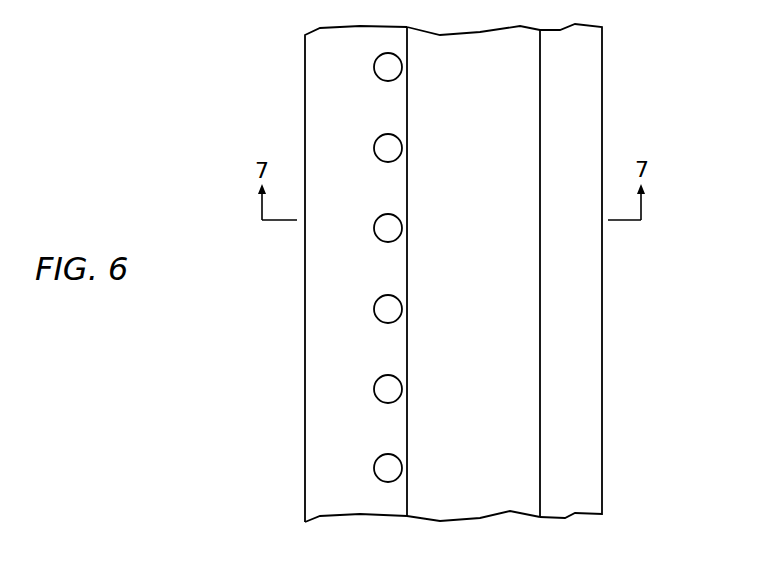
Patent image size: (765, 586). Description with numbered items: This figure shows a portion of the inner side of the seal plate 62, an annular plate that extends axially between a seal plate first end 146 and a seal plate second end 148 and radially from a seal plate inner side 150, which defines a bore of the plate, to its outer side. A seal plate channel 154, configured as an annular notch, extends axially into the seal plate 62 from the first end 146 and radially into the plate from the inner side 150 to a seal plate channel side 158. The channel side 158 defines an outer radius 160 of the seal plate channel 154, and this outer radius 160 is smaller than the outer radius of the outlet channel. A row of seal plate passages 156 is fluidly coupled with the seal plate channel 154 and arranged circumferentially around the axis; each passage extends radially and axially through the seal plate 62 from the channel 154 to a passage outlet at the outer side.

The seal plate 62 is at (219, 61).
The seal plate first end 146 is at (305, 352).
The seal plate second end 148 is at (602, 305).
The seal plate inner side 150 is at (493, 453).
The seal plate channel 154 is at (344, 503).
The seal plate passages 156 is at (387, 391).
The seal plate channel side 158 is at (328, 400).
The outer radius 160 is at (494, 548).